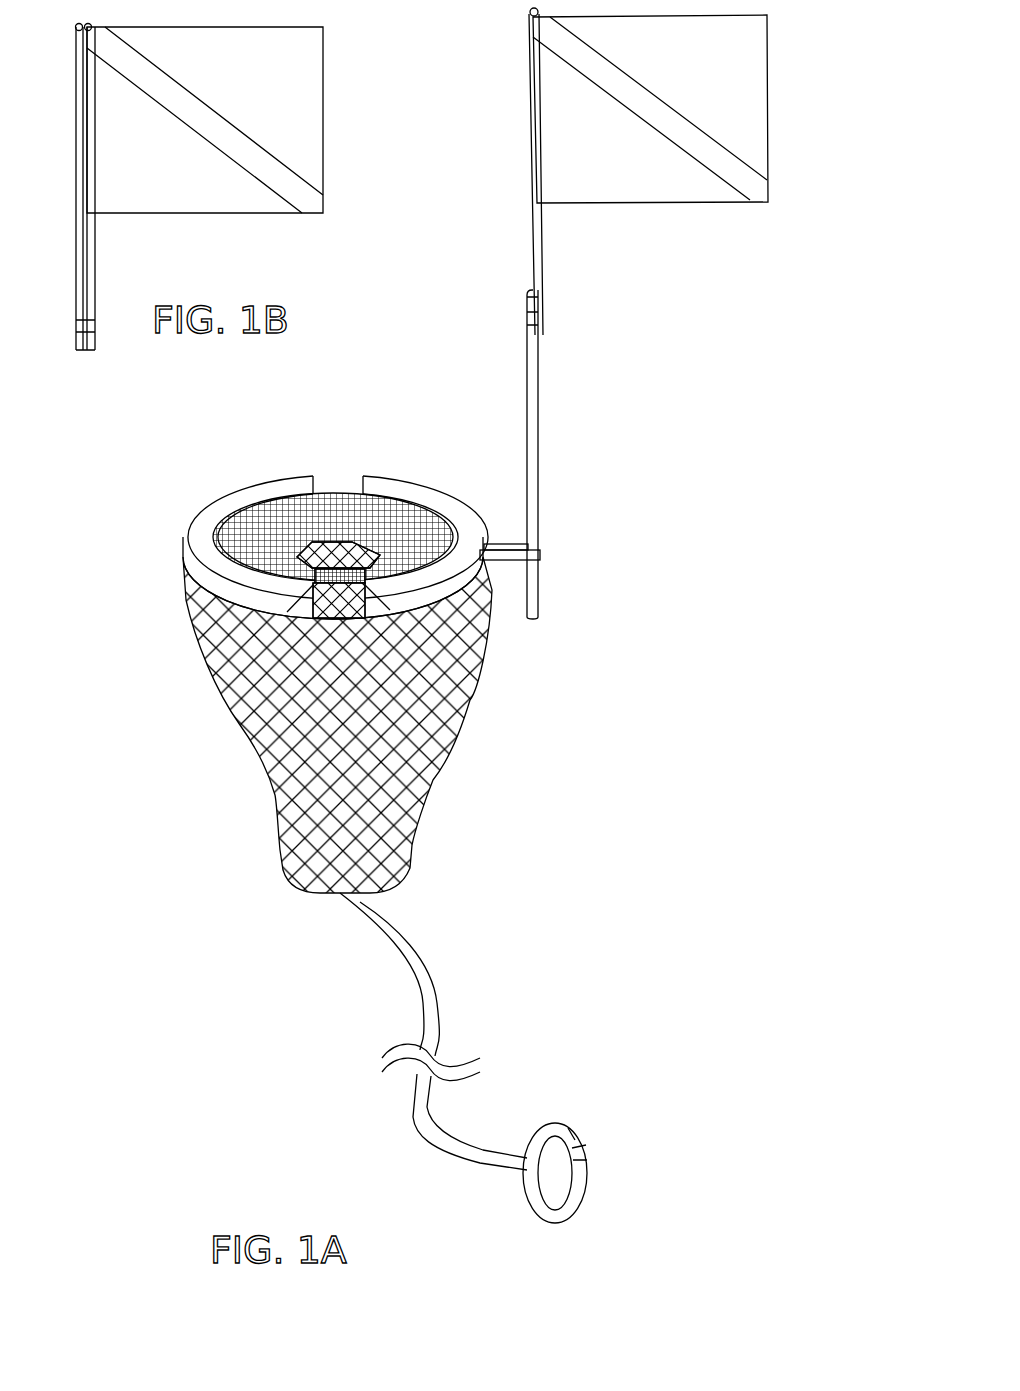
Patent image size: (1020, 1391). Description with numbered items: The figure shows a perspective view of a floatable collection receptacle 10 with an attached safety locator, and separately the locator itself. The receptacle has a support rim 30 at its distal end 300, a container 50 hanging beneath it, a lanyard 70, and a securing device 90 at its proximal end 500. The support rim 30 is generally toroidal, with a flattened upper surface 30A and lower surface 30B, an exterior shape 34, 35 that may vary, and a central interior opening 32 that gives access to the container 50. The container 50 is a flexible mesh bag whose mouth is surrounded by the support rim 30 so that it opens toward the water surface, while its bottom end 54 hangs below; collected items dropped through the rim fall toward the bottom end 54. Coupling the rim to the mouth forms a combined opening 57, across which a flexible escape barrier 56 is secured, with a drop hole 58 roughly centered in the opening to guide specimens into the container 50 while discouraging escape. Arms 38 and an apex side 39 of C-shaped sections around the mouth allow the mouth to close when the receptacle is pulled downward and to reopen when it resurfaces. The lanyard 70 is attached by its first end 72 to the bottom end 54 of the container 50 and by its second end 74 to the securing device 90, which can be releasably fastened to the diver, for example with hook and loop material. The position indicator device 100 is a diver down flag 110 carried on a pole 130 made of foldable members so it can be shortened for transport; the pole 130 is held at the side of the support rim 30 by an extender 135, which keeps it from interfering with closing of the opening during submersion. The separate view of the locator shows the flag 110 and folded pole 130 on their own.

In FIG. 1A, the floatable collection receptacle 10 is at (143, 904).
In FIG. 1A, the support rim 30 is at (283, 477).
In FIG. 1A, the upper surface 30A is at (205, 542).
In FIG. 1A, the lower surface 30B is at (460, 700).
In FIG. 1A, the interior opening 32 is at (393, 495).
In FIG. 1A, the exterior shape 34 is at (213, 580).
In FIG. 1A, the exterior shape 35 is at (273, 513).
In FIG. 1A, the arms 38 is at (372, 482).
In FIG. 1A, the apex side 39 is at (475, 533).
In FIG. 1A, the container 50 is at (290, 740).
In FIG. 1A, the bottom end 54 is at (327, 895).
In FIG. 1A, the escape barrier 56 is at (335, 505).
In FIG. 1A, the combined opening 57 is at (313, 600).
In FIG. 1A, the drop hole 58 is at (343, 505).
In FIG. 1A, the lanyard 70 is at (405, 957).
In FIG. 1A, the first end 72 is at (360, 902).
In FIG. 1A, the second end 74 is at (523, 1163).
In FIG. 1A, the securing device 90 is at (553, 1127).
In FIG. 1B, the position indicator device 100 is at (358, 122).
In FIG. 1A, the position indicator device 100 is at (788, 92).
In FIG. 1B, the diver down flag 110 is at (189, 182).
In FIG. 1A, the diver down flag 110 is at (722, 78).
In FIG. 1B, the pole 130 is at (78, 275).
In FIG. 1A, the pole 130 is at (532, 450).
In FIG. 1A, the extender 135 is at (503, 558).
In FIG. 1A, the distal end 300 is at (640, 487).
In FIG. 1A, the proximal end 500 is at (675, 1189).